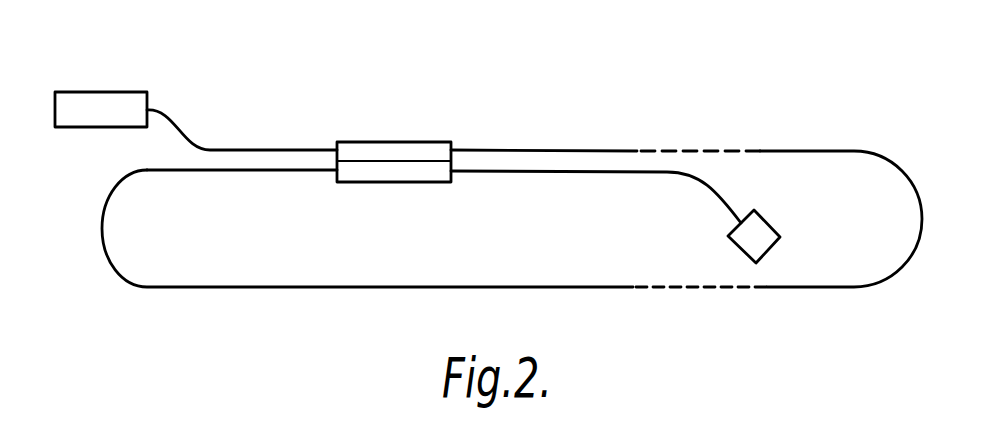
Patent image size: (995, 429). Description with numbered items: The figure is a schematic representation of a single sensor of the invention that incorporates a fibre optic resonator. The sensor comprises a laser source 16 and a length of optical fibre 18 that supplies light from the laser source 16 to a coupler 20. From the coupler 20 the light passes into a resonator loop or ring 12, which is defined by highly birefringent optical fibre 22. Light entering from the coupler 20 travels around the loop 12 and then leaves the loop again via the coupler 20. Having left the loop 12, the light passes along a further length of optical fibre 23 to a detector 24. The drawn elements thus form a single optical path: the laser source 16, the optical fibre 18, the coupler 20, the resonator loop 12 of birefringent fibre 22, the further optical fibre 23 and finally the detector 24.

The resonator loop 12 is at (512, 219).
The laser source 16 is at (118, 100).
The optical fibre 18 is at (265, 150).
The coupler 20 is at (413, 143).
The highly birefringent optical fibre 22 is at (235, 171).
The further length of optical fibre 23 is at (650, 175).
The detector 24 is at (767, 217).